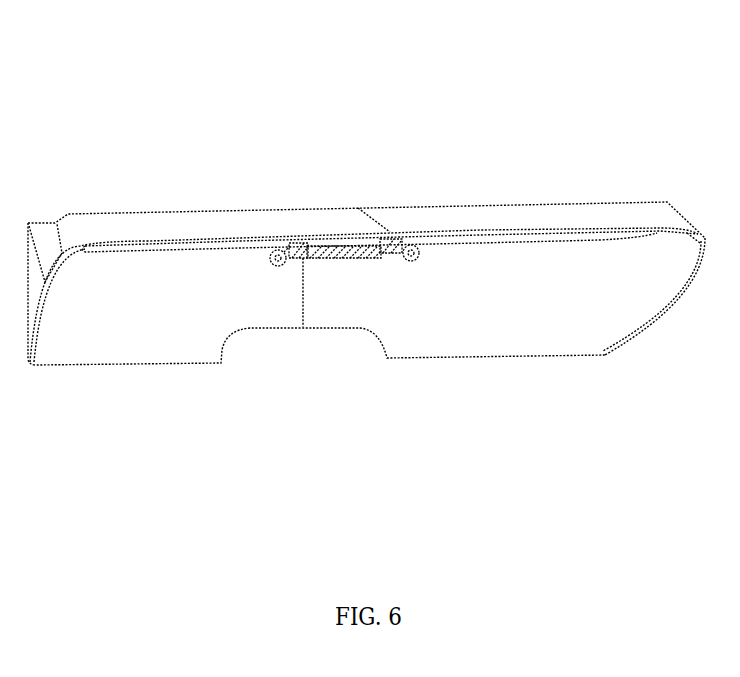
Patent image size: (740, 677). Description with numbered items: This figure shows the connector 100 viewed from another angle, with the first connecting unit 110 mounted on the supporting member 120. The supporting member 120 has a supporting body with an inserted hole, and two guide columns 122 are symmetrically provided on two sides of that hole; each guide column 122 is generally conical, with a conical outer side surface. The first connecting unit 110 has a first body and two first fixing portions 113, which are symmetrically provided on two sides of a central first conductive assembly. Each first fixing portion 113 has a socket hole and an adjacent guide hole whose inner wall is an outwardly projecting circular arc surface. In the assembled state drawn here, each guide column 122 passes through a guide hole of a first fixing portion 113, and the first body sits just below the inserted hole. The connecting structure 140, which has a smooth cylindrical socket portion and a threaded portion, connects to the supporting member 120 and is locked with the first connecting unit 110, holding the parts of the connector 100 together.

The connector 100 is at (125, 98).
The first connecting unit 110 is at (370, 250).
The first fixing portions 113 is at (302, 250).
The supporting member 120 is at (470, 217).
The guide columns 122 is at (395, 253).
The connecting structure 140 is at (277, 258).